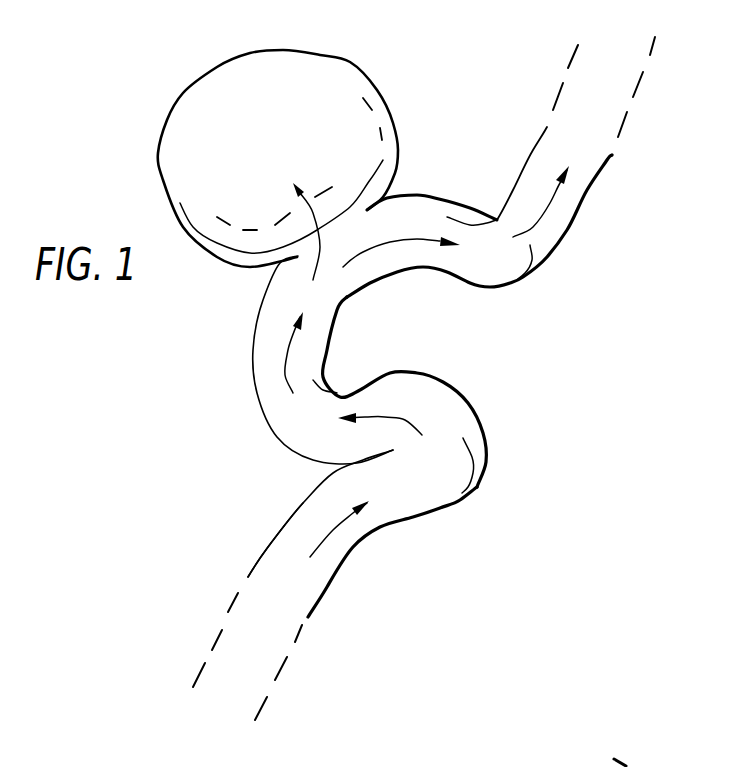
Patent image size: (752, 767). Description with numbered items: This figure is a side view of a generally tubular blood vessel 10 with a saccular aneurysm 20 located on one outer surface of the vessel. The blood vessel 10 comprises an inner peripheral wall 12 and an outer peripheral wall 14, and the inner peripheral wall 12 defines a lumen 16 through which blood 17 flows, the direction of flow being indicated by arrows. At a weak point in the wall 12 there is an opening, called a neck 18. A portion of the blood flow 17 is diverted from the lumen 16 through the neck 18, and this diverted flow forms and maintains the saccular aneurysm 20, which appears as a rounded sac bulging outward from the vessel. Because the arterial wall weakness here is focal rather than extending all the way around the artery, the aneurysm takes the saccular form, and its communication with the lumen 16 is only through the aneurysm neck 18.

The blood vessel 10 is at (243, 423).
The inner peripheral wall 12 is at (267, 552).
The outer peripheral wall 14 is at (302, 507).
The lumen 16 is at (293, 595).
The blood 17 is at (392, 243).
The neck 18 is at (350, 220).
The saccular aneurysm 20 is at (257, 72).